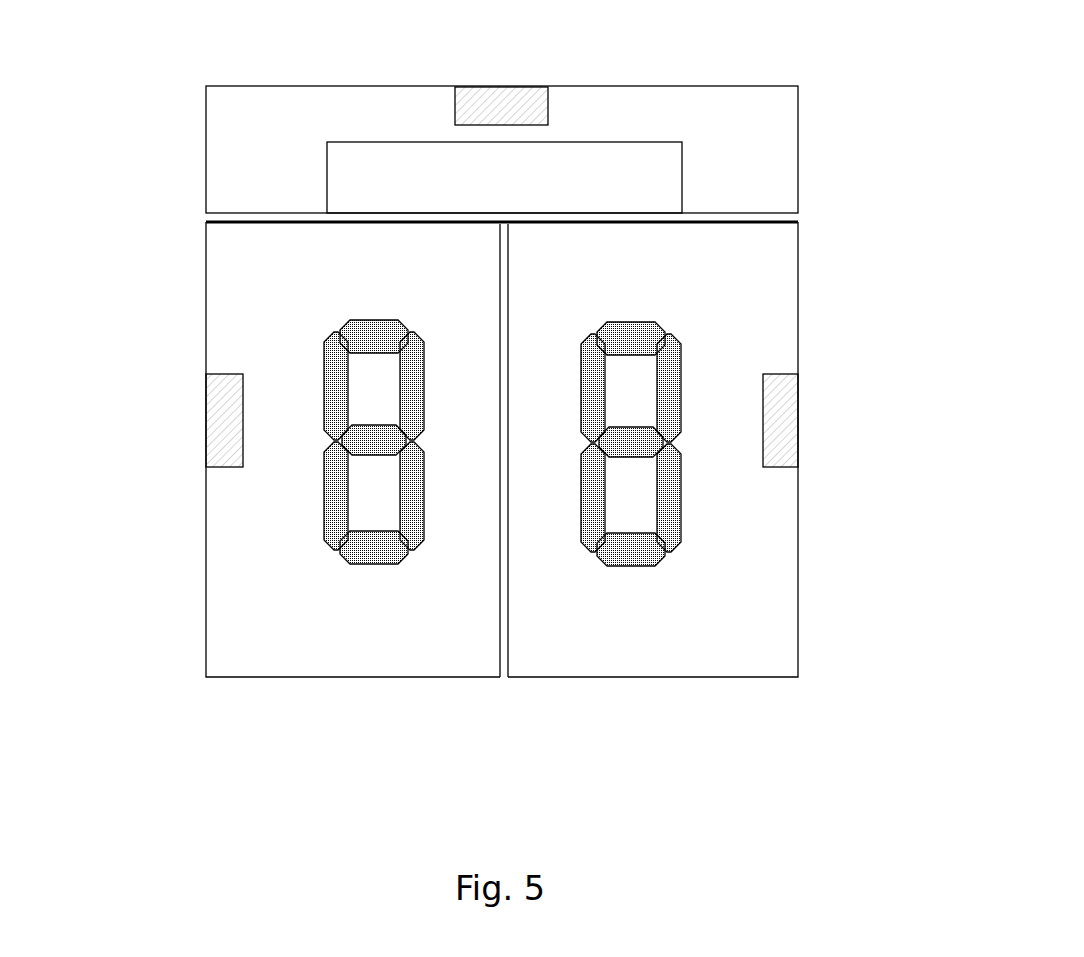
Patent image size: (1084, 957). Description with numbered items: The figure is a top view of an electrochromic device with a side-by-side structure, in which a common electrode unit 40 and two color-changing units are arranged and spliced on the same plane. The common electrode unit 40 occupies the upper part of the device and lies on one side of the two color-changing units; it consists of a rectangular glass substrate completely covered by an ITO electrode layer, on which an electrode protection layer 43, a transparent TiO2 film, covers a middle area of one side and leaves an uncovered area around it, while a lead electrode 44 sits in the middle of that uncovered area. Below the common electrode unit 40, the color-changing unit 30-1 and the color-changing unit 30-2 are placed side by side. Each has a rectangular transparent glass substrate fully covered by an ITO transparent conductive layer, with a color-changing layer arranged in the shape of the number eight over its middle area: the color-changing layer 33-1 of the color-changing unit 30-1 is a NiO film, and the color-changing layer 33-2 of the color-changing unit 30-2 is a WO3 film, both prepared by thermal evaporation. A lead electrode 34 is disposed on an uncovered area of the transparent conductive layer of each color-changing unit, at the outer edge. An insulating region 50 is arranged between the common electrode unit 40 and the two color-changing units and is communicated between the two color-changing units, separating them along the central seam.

The common electrode unit 40 is at (763, 130).
The electrode protection layer 43 is at (633, 178).
The lead electrode 44 is at (498, 100).
The insulating region 50 is at (217, 221).
The color-changing unit 30-1 is at (243, 613).
The color-changing unit 30-2 is at (760, 630).
The color-changing layer 33-1 is at (330, 516).
The color-changing layer 33-2 is at (665, 500).
The lead electrode 34 is at (218, 410).